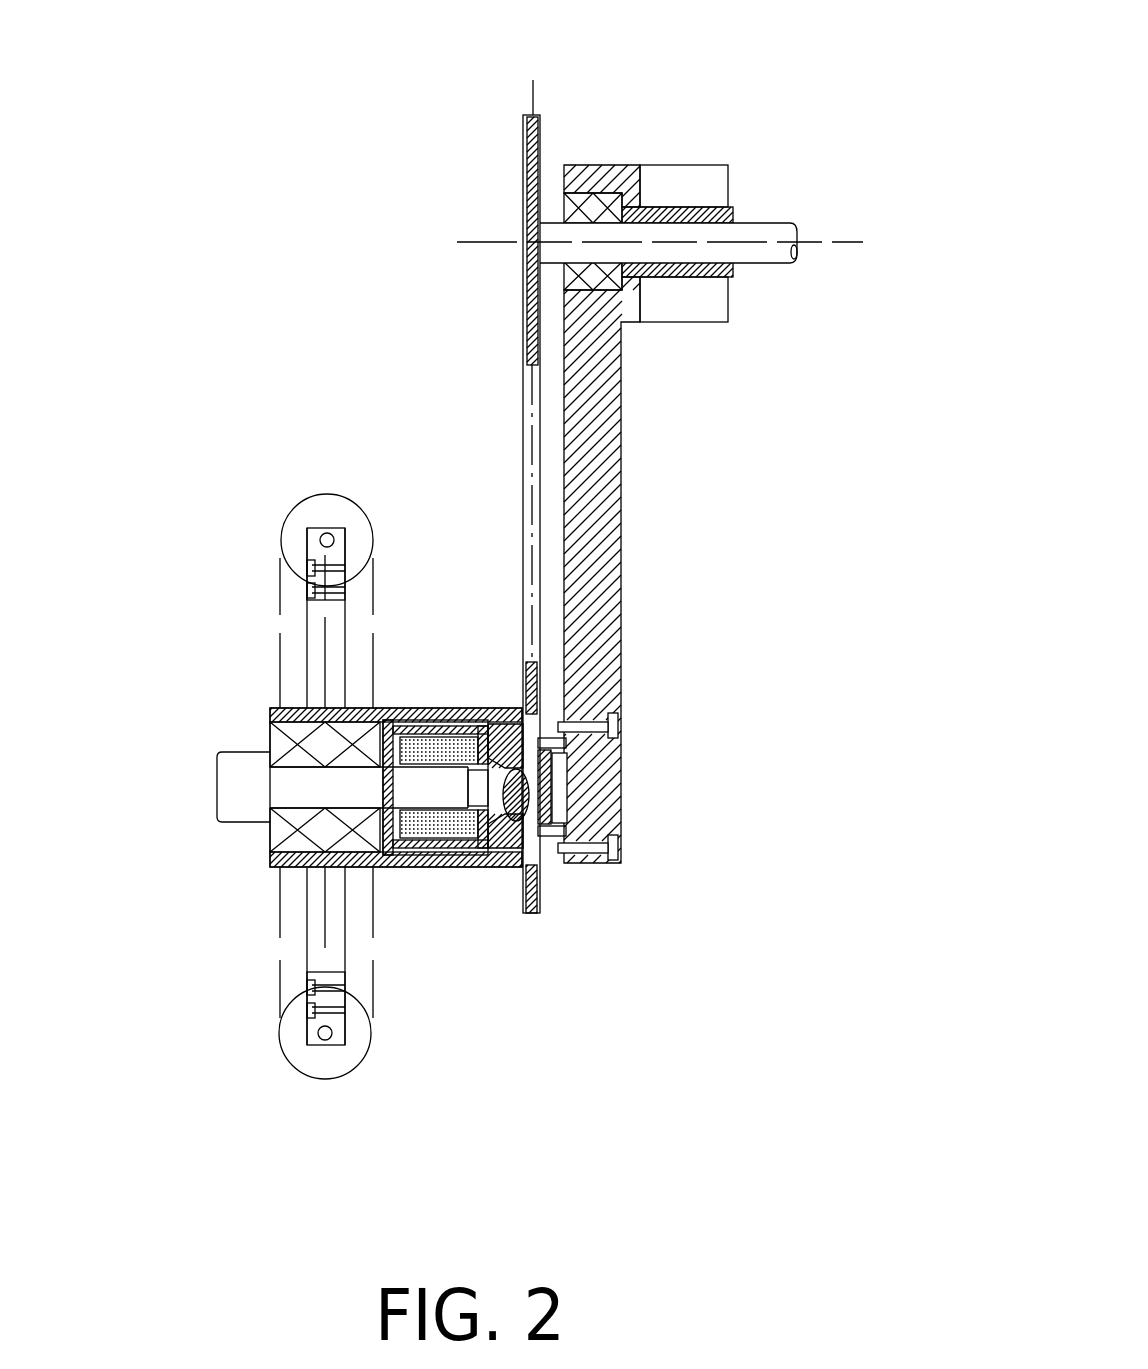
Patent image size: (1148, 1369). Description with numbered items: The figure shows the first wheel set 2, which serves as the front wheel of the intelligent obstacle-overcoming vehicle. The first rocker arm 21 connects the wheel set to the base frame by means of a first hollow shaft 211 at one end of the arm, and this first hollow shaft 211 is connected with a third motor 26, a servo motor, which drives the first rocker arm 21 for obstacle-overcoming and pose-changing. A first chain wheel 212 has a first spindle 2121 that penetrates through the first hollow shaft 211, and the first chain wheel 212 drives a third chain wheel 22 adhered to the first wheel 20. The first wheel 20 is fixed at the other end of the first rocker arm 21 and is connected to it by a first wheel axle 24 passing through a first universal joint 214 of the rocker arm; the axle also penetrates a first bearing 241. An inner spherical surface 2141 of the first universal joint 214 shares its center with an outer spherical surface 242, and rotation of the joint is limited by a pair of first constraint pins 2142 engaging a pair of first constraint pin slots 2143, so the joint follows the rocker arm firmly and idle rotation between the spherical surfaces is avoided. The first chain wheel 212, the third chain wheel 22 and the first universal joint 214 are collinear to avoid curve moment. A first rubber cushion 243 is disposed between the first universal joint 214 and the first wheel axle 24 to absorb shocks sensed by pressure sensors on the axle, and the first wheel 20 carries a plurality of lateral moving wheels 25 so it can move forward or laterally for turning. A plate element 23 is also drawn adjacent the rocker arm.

The first wheel set 2 is at (290, 106).
The first wheel 20 is at (270, 596).
The first rocker arm 21 is at (622, 497).
The first hollow shaft 211 is at (718, 208).
The first chain wheel 212 is at (522, 128).
The first spindle 2121 is at (760, 263).
The first universal joint 214 is at (520, 775).
The inner spherical surface 2141 is at (578, 862).
The first constraint pins 2142 is at (556, 735).
The first constraint pin slots 2143 is at (542, 870).
The third chain wheel 22 is at (525, 915).
The support plate 23 is at (521, 407).
The first wheel axle 24 is at (468, 868).
The first bearing 241 is at (270, 742).
The outer spherical surface 242 is at (525, 745).
The first rubber cushion 243 is at (402, 868).
The lateral moving wheels 25 is at (290, 1033).
The third motor 26 is at (684, 165).